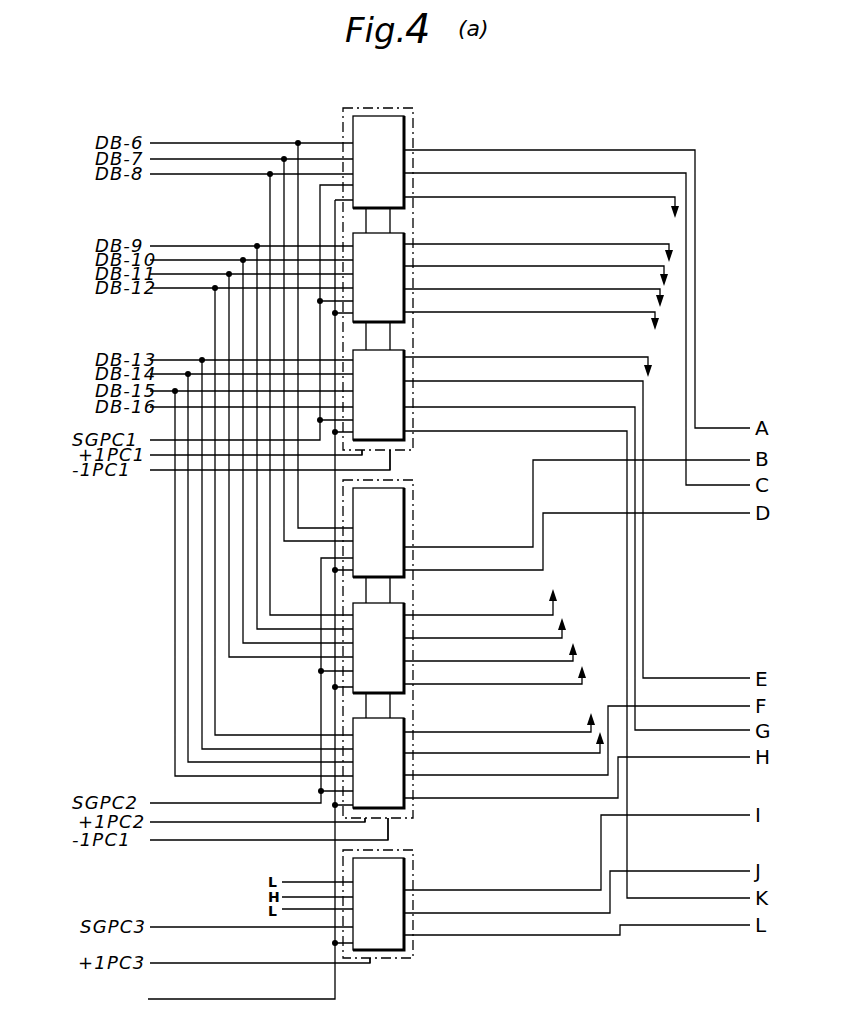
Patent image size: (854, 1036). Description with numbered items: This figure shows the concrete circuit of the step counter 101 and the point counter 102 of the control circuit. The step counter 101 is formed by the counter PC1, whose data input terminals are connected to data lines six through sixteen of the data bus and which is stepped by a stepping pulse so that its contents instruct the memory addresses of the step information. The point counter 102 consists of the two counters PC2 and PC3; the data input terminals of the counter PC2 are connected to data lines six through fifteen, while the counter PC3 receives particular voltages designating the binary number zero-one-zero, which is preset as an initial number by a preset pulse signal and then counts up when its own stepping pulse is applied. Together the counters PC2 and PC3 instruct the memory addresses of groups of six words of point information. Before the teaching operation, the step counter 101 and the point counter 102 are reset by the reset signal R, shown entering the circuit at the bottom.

The step counter 101 is at (366, 108).
The point counter 102 is at (413, 481).
The counter PC1 is at (418, 275).
The counter PC2 is at (417, 649).
The counter PC3 is at (413, 860).
The reset signal R is at (227, 605).